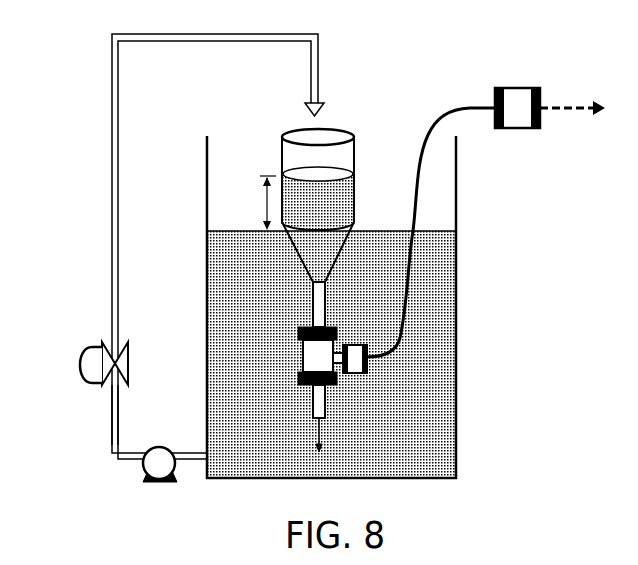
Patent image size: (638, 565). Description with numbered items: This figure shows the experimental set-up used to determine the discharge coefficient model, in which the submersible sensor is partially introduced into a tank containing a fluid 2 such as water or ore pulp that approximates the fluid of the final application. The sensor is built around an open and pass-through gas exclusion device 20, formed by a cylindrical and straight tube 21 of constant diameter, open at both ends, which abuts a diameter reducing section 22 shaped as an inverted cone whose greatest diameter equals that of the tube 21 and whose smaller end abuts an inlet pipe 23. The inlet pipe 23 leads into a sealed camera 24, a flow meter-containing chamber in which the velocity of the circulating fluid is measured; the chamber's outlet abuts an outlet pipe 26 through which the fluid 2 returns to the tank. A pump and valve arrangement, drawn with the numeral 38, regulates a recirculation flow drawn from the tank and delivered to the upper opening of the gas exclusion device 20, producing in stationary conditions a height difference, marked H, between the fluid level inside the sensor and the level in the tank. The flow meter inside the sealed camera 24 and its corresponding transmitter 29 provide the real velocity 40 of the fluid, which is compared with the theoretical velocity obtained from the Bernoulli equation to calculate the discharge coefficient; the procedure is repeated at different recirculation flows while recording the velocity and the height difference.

The fluid 2 is at (390, 457).
The gas exclusion device 20 is at (345, 257).
The cylindrical tube 21 is at (360, 158).
The diameter reducing section 22 is at (318, 245).
The inlet pipe 23 is at (318, 307).
The sealed camera 24 is at (318, 353).
The outlet pipe 26 is at (335, 401).
The transmitter 29 is at (515, 115).
The valve and pump 38 is at (78, 358).
The real velocity 40 is at (575, 103).